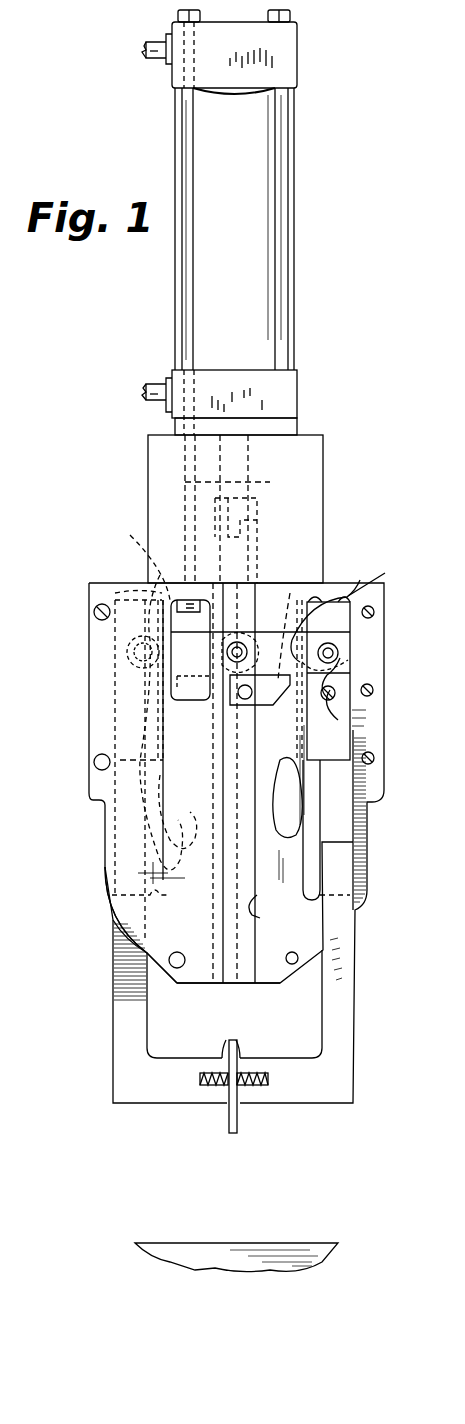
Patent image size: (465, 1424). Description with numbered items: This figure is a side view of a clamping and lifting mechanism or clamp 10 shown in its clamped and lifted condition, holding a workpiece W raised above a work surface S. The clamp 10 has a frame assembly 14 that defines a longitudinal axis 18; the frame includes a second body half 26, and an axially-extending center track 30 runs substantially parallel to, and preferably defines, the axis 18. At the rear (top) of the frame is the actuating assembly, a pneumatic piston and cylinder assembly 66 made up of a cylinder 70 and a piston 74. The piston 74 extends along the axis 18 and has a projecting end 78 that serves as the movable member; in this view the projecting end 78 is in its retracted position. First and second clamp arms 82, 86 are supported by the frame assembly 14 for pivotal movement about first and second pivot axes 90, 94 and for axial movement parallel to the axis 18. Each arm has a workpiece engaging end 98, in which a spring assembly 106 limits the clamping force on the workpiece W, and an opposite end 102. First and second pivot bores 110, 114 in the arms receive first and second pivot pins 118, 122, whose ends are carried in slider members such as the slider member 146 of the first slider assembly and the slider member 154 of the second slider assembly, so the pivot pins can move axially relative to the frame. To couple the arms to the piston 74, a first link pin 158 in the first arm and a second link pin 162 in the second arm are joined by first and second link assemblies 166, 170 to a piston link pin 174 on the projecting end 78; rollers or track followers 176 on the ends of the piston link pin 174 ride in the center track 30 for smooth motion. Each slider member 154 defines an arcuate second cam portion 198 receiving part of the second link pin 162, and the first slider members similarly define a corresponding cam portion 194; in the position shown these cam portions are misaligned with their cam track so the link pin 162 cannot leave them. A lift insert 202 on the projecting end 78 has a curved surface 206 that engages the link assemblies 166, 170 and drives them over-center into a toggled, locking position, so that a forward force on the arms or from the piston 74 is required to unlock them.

The clamp 10 is at (97, 492).
The frame assembly 14 is at (89, 652).
The longitudinal axis 18 is at (235, 1006).
The second body half 26 is at (127, 912).
The center track 30 is at (258, 914).
The piston and cylinder assembly 66 is at (314, 367).
The cylinder 70 is at (253, 128).
The piston 74 is at (245, 462).
The projecting end 78 is at (238, 515).
The first clamp arm 82 is at (113, 996).
The second clamp arm 86 is at (340, 982).
The first pivot axis 90 is at (163, 690).
The second pivot axis 94 is at (340, 685).
The workpiece engaging end 98 is at (236, 1040).
The opposite end 102 is at (112, 626).
The spring assembly 106 is at (190, 1080).
The first pivot bore 110 is at (157, 672).
The second pivot bore 114 is at (350, 728).
The first pivot pin 118 is at (130, 700).
The second pivot pin 122 is at (335, 700).
The slider member 146 is at (95, 786).
The slider member 154 is at (350, 752).
The first link pin 158 is at (94, 608).
The second link pin 162 is at (340, 648).
The first link assembly 166 is at (140, 548).
The second link assembly 170 is at (322, 569).
The piston link pin 174 is at (256, 590).
The track followers 176 is at (258, 600).
The cam follower 194 is at (135, 590).
The second cam portion 198 is at (385, 573).
The lift insert 202 is at (207, 710).
The curved surface 206 is at (300, 706).
The workpiece W is at (226, 1128).
The work surface S is at (310, 1252).